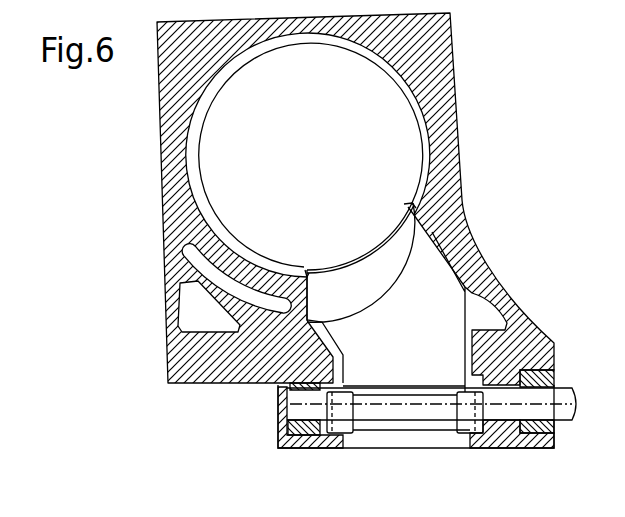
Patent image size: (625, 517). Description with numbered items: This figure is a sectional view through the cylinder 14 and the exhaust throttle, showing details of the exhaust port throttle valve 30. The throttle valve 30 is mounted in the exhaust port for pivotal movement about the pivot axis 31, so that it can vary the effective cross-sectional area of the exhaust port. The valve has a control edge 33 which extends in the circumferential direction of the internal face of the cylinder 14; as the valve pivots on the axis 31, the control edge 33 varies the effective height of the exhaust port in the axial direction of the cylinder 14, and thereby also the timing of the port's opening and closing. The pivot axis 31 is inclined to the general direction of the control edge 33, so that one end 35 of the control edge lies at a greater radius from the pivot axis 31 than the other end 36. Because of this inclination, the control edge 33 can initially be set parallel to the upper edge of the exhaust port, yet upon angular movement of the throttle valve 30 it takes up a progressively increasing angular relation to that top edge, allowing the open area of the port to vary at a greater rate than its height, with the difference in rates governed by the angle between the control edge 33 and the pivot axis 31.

The cylinder 14 is at (316, 126).
The exhaust port throttle valve 30 is at (403, 364).
The pivot axis 31 is at (290, 420).
The control edge 33 is at (362, 259).
The end of the control edge 35 is at (411, 205).
The other end of the control edge 36 is at (305, 275).